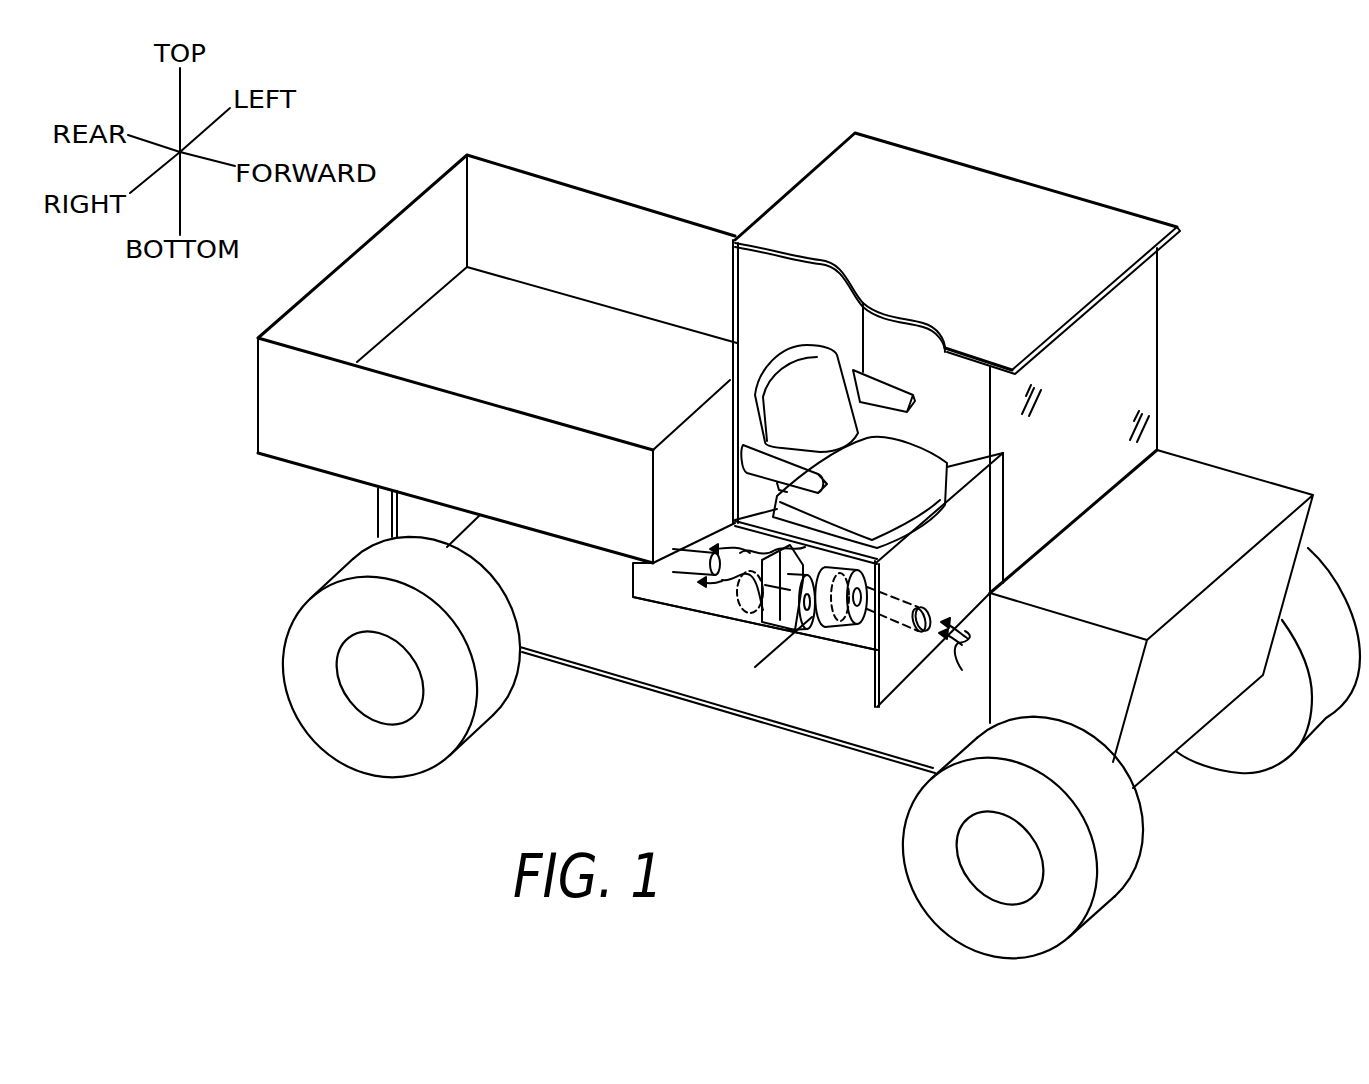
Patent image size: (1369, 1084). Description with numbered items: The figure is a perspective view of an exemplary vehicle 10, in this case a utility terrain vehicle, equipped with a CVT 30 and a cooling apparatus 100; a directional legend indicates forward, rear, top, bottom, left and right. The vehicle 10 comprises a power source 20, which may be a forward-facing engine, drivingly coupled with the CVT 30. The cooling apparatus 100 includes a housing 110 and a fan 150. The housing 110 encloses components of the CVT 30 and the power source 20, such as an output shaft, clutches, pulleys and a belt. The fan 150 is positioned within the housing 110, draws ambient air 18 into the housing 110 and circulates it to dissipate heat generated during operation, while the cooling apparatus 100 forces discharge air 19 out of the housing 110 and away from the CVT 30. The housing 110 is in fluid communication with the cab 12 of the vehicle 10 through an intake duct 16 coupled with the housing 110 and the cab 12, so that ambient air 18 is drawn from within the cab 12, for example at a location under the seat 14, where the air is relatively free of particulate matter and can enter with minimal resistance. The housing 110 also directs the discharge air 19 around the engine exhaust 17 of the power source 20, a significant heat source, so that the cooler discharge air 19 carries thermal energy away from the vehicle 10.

The vehicle 10 is at (1127, 182).
The cab 12 is at (890, 338).
The seat 14 is at (795, 352).
The intake duct 16 is at (897, 617).
The engine exhaust 17 is at (672, 572).
The ambient air 18 is at (960, 658).
The discharge air 19 is at (733, 603).
The power source 20 is at (680, 600).
The CVT 30 is at (752, 613).
The cooling apparatus 100 is at (818, 643).
The housing 110 is at (812, 630).
The fan 150 is at (842, 630).